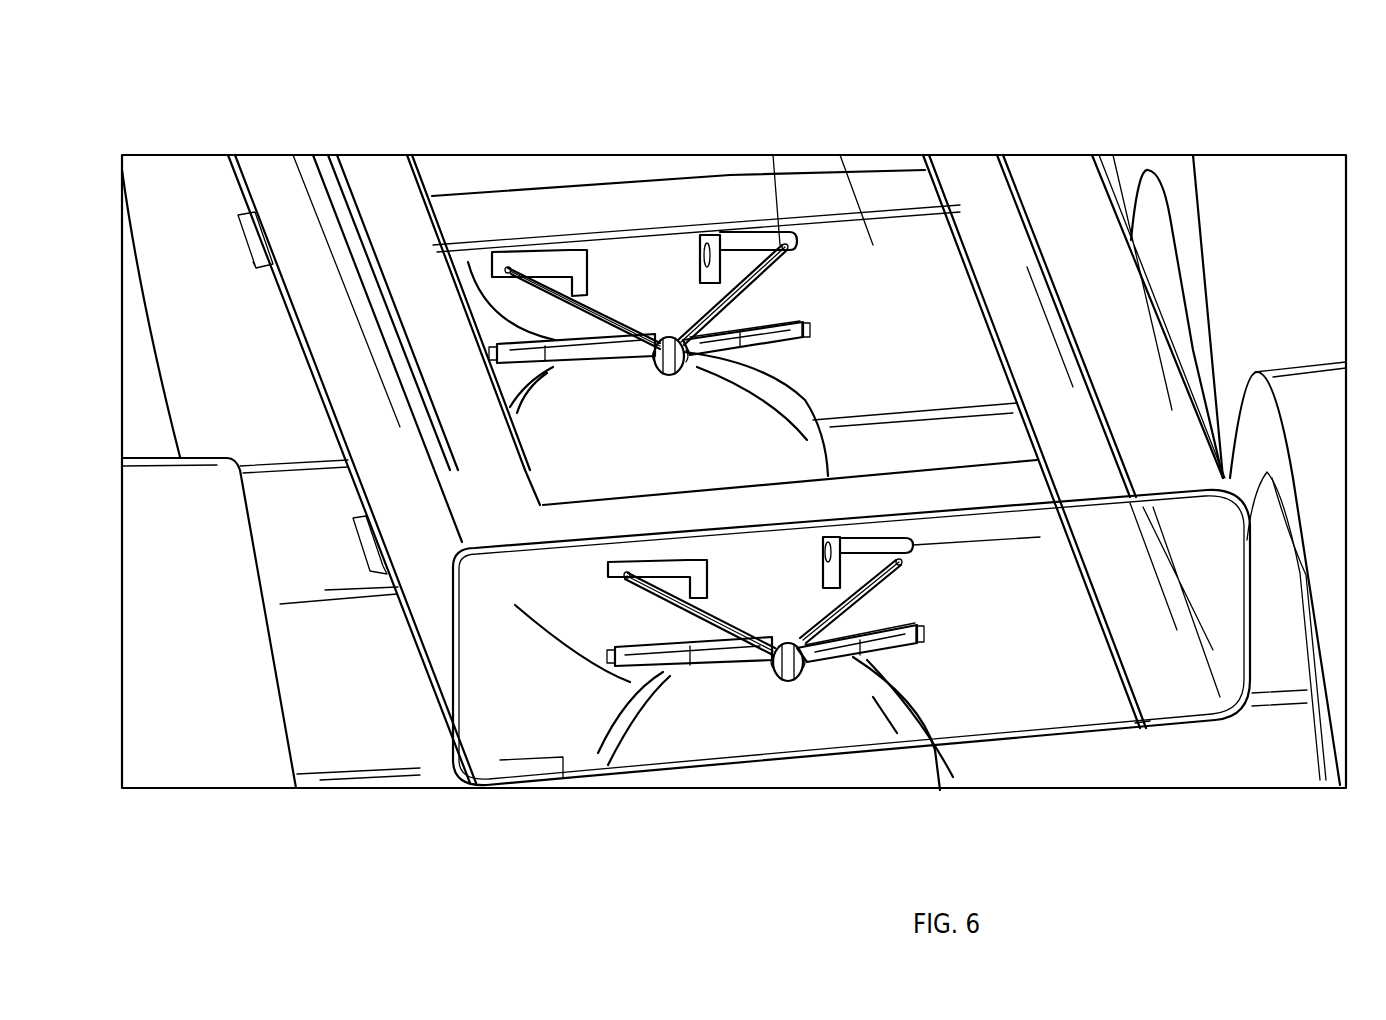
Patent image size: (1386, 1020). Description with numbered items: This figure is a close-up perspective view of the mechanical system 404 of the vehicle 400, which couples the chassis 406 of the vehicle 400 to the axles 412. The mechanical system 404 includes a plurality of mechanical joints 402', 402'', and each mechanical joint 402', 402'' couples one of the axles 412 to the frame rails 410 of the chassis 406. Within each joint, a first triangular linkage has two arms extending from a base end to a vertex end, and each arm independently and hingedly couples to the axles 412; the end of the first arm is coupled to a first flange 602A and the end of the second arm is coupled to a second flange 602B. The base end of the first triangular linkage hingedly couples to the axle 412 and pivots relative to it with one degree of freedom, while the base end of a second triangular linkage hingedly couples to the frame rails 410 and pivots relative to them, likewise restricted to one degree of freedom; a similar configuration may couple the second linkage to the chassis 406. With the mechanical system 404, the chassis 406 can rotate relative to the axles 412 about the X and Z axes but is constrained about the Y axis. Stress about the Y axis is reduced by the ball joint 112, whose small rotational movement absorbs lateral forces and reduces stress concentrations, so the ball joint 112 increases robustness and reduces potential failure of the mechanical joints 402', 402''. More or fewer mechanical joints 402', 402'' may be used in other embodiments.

The vehicle 400 is at (1226, 92).
The mechanical joint 402' is at (712, 302).
The mechanical joint 402'' is at (791, 455).
The mechanical system 404 is at (597, 384).
The chassis 406 is at (1060, 172).
The frame rails 410 is at (369, 170).
The axles 412 is at (293, 488).
The ball joint 112 is at (657, 373).
The first flange 602A is at (705, 577).
The second flange 602B is at (835, 550).